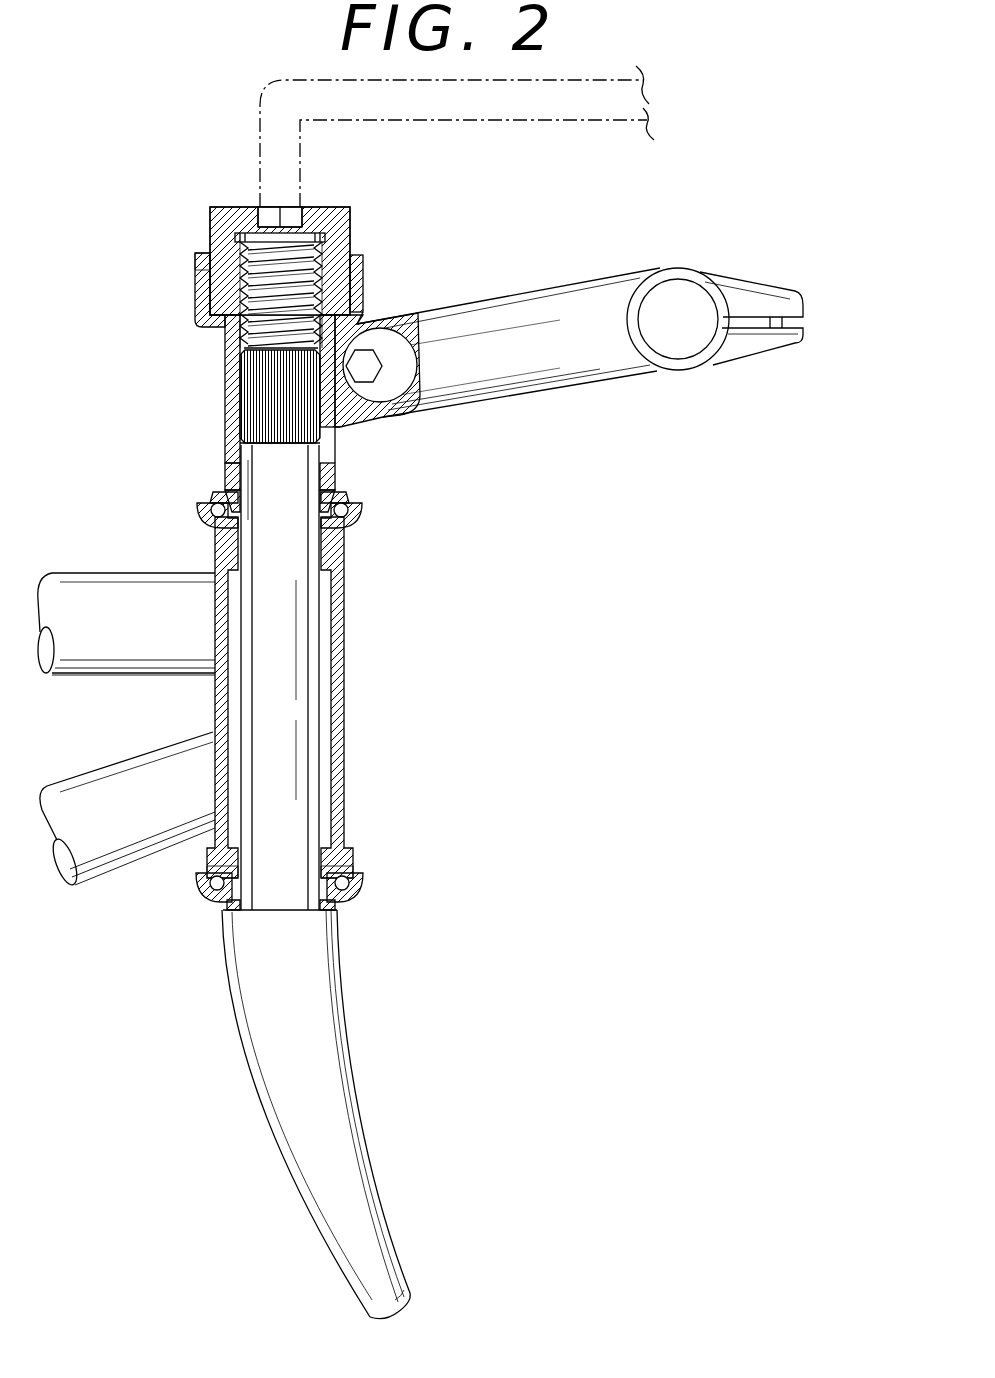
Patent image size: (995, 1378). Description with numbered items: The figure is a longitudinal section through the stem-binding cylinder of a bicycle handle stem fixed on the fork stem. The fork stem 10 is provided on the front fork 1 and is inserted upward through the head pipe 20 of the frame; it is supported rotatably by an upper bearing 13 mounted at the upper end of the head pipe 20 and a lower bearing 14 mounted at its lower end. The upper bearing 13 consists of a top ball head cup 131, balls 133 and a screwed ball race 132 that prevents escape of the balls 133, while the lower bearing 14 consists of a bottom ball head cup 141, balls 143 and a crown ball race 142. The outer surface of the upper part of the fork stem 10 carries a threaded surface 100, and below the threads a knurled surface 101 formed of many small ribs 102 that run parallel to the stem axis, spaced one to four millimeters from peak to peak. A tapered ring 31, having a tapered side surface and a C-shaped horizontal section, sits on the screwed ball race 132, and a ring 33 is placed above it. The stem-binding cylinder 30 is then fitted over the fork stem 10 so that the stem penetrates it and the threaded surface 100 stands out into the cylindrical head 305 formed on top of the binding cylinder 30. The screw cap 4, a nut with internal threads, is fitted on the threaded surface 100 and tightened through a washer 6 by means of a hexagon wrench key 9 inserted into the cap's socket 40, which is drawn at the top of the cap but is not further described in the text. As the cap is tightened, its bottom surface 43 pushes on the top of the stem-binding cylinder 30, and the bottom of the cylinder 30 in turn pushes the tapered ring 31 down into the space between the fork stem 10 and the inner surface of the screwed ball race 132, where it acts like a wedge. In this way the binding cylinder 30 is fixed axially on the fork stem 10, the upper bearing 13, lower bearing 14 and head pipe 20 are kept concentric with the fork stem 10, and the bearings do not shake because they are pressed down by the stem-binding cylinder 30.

The front fork 1 is at (330, 1000).
The screw cap 4 is at (330, 213).
The washer 6 is at (280, 380).
The hexagon wrench key 9 is at (523, 117).
The fork stem 10 is at (303, 730).
The upper bearing 13 is at (502, 558).
The lower bearing 14 is at (493, 935).
The head pipe 20 is at (342, 655).
The stem-binding cylinder 30 is at (220, 333).
The tapered ring 31 is at (223, 482).
The ring 33 is at (223, 470).
The bolt 40 is at (270, 212).
The bottom surface 43 is at (197, 290).
The threaded surface 100 is at (320, 243).
The knurled surface 101 is at (400, 315).
The ribs 102 is at (257, 373).
The top ball head cup 131 is at (358, 520).
The screwed ball race 132 is at (347, 492).
The balls 133 is at (353, 503).
The bottom ball head cup 141 is at (353, 897).
The crown ball race 142 is at (347, 873).
The balls 143 is at (350, 882).
The cylindrical head 305 is at (195, 262).